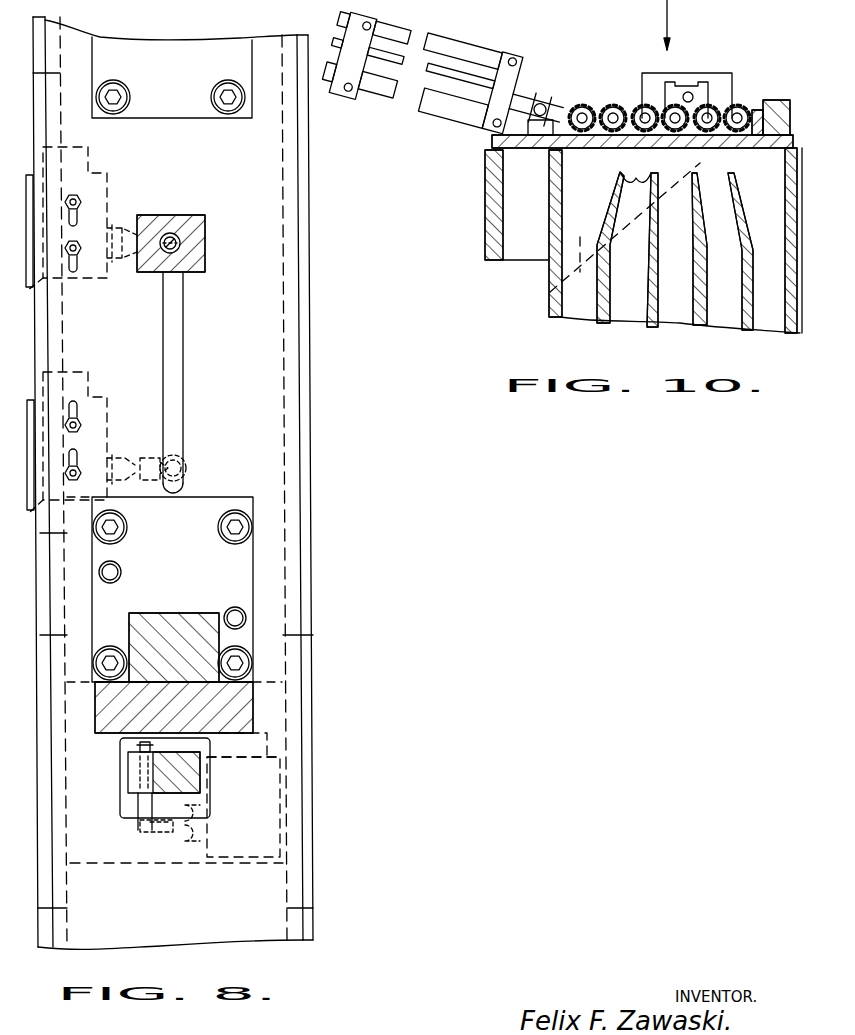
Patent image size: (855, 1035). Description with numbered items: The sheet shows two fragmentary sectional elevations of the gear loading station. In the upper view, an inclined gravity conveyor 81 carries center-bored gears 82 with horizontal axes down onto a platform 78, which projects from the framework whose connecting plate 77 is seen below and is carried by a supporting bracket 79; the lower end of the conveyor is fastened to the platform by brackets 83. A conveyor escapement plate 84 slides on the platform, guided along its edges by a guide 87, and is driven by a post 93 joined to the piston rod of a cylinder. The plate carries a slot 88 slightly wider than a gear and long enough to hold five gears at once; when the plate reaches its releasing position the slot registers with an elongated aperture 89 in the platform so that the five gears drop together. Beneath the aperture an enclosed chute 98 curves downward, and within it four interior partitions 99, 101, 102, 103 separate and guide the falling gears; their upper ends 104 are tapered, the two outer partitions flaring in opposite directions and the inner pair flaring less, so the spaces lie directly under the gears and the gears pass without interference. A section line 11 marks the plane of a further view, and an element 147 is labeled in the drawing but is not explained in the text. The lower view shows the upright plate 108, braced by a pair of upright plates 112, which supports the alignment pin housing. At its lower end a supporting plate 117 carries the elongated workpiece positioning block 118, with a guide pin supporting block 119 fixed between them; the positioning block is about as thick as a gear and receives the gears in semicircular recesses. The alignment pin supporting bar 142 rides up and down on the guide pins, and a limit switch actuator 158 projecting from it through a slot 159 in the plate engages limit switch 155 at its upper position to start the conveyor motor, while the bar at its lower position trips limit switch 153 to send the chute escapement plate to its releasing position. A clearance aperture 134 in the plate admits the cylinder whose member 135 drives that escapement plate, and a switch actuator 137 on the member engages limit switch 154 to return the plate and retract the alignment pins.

In FIG. 10, the section line 11 is at (667, 35).
In FIG. 10, the connecting plate 77 is at (497, 180).
In FIG. 10, the platform 78 is at (493, 140).
In FIG. 10, the supporting bracket 79 is at (542, 297).
In FIG. 10, the inclined gravity conveyor 81 is at (470, 50).
In FIG. 10, the center-bored gears 82 is at (620, 100).
In FIG. 10, the brackets 83 is at (522, 127).
In FIG. 10, the conveyor escapement plate 84 is at (760, 113).
In FIG. 10, the guide 87 is at (777, 100).
In FIG. 10, the slot 88 is at (660, 130).
In FIG. 10, the elongated aperture 89 is at (603, 150).
In FIG. 10, the post 93 is at (687, 82).
In FIG. 10, the enclosed chute 98 is at (553, 263).
In FIG. 10, the interior partition 99 is at (593, 303).
In FIG. 10, the interior partition 101 is at (645, 303).
In FIG. 10, the interior partition 102 is at (690, 300).
In FIG. 10, the interior partition 103 is at (737, 303).
In FIG. 10, the upper ends of the partitions 104 is at (640, 163).
In FIG. 10, the pinion 147 is at (709, 120).
In FIG. 8, the plate 108 is at (260, 312).
In FIG. 8, the upright plates 112 is at (308, 262).
In FIG. 8, the supporting plate 117 is at (197, 510).
In FIG. 8, the workpiece positioning block 118 is at (242, 707).
In FIG. 8, the guide pin supporting block 119 is at (163, 620).
In FIG. 8, the clearance aperture 134 is at (125, 773).
In FIG. 8, the member 135 is at (187, 777).
In FIG. 8, the switch actuator 137 is at (136, 805).
In FIG. 8, the alignment pin supporting bar 142 is at (207, 236).
In FIG. 8, the limit switch LS3 153 is at (100, 420).
In FIG. 8, the limit switch LS4 154 is at (253, 830).
In FIG. 8, the limit switch LS5 155 is at (97, 203).
In FIG. 8, the limit switch actuator 158 is at (176, 236).
In FIG. 8, the slot 159 is at (178, 352).